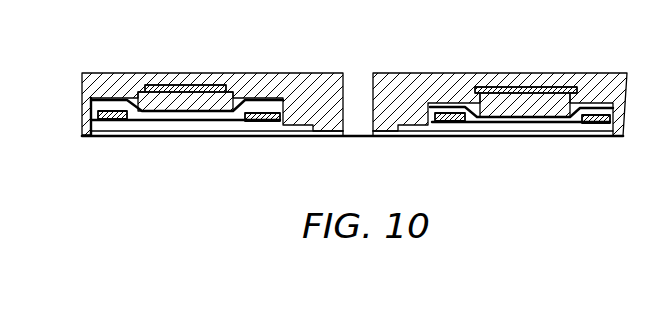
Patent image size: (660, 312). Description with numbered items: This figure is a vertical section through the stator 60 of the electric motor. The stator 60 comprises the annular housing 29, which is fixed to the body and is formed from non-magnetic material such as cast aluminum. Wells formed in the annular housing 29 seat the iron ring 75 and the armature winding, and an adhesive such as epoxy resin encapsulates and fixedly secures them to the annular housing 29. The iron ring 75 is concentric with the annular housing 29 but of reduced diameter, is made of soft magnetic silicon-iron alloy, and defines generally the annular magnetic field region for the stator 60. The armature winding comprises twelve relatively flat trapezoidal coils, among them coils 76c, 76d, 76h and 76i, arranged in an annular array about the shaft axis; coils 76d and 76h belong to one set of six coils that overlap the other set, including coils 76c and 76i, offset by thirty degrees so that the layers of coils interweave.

The annular housing 29 is at (97, 81).
The stator 60 is at (139, 179).
The iron ring 75 is at (192, 99).
The coil 76c is at (107, 137).
The coil 76d is at (118, 107).
The coil 76h is at (450, 108).
The coil 76i is at (445, 133).